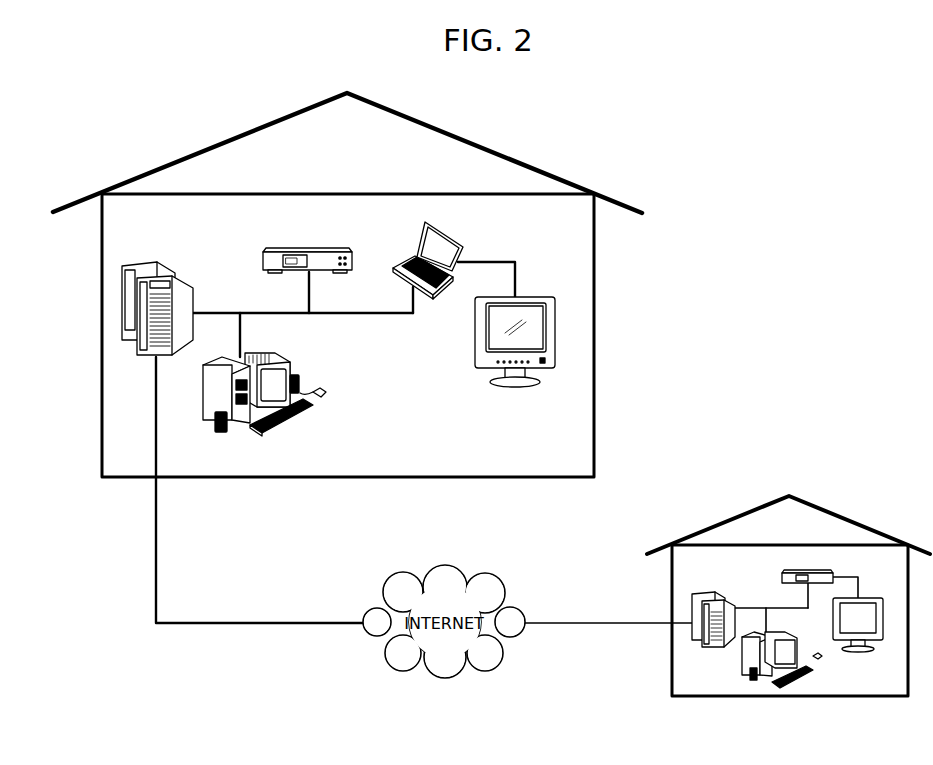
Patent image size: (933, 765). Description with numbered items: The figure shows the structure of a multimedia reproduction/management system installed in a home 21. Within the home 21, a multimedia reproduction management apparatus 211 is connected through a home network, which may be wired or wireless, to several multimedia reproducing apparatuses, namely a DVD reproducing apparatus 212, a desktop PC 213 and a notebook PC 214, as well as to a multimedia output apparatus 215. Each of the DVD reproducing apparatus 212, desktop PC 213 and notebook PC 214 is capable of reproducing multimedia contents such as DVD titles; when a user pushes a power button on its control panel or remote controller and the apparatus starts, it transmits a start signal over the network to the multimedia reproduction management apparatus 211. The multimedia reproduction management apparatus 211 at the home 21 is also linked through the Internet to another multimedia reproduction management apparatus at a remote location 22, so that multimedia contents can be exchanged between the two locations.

The home 21 is at (499, 153).
The remote location 22 is at (863, 528).
The multimedia reproduction management apparatus 211 is at (164, 273).
The DVD reproducing apparatus 212 is at (309, 249).
The desktop PC 213 is at (297, 368).
The notebook PC 214 is at (455, 237).
The multimedia output apparatus 215 is at (535, 298).